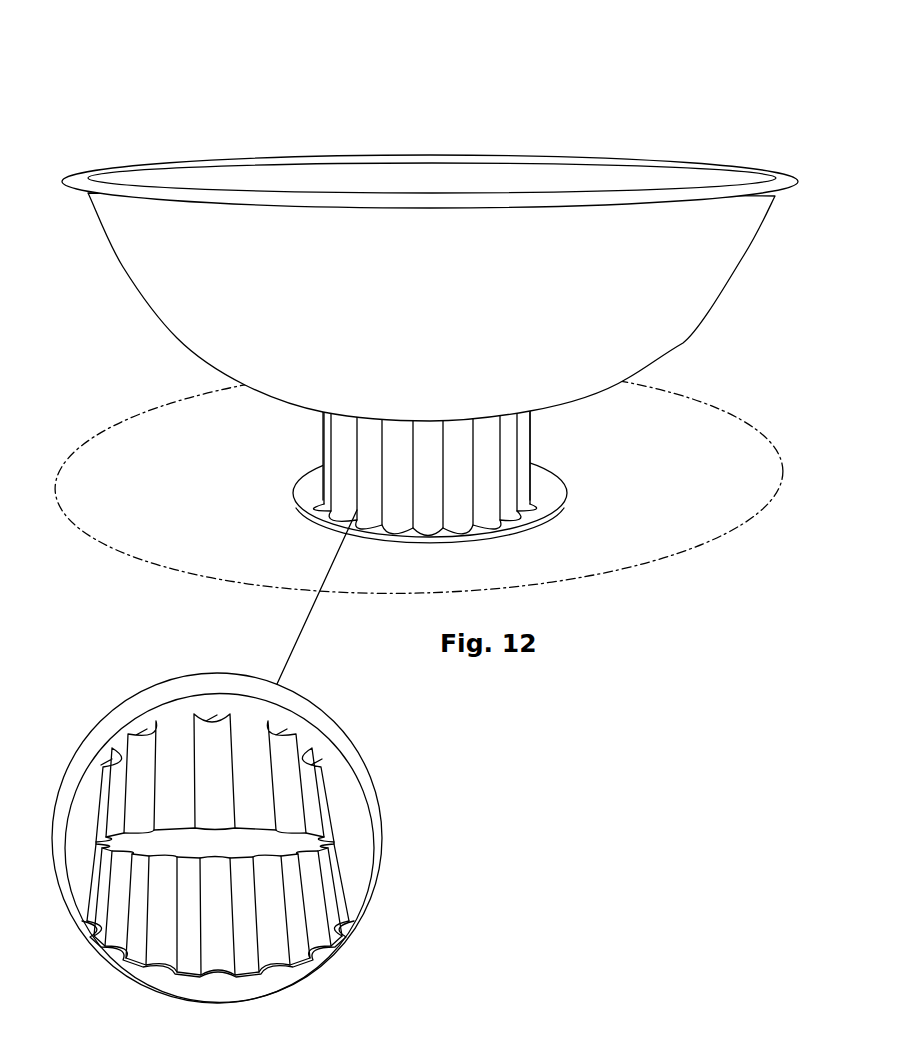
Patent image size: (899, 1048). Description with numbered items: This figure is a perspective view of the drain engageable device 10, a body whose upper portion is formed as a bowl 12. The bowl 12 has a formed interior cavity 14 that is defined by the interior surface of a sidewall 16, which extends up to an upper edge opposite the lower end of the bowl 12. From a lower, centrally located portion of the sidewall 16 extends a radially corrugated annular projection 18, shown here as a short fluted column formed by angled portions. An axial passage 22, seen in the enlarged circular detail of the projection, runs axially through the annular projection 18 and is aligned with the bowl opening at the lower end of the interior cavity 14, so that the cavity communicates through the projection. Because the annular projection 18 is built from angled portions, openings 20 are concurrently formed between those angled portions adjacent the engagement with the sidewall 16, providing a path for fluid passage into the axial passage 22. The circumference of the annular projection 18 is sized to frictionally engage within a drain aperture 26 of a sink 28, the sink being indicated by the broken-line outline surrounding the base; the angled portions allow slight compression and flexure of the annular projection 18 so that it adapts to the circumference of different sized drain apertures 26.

The drain engageable device 10 is at (429, 257).
The bowl 12 is at (87, 194).
The interior cavity 14 is at (232, 174).
The sidewall 16 is at (145, 255).
The annular projection 18 is at (523, 425).
The openings 20 is at (530, 503).
The axial passage 22 is at (251, 842).
The drain aperture 26 is at (493, 522).
The sink 28 is at (203, 482).